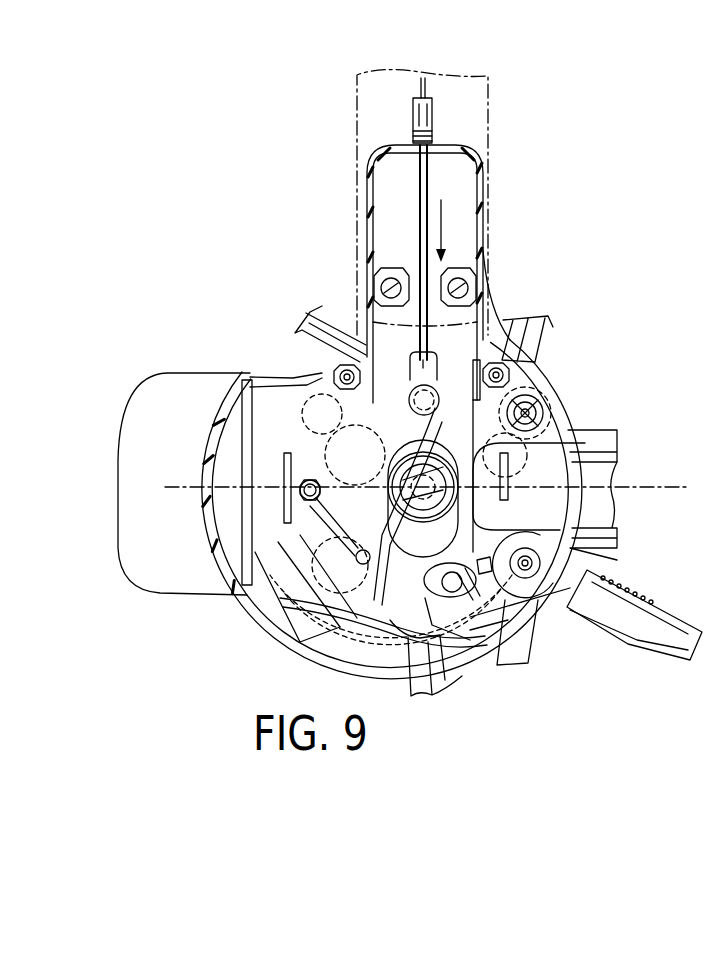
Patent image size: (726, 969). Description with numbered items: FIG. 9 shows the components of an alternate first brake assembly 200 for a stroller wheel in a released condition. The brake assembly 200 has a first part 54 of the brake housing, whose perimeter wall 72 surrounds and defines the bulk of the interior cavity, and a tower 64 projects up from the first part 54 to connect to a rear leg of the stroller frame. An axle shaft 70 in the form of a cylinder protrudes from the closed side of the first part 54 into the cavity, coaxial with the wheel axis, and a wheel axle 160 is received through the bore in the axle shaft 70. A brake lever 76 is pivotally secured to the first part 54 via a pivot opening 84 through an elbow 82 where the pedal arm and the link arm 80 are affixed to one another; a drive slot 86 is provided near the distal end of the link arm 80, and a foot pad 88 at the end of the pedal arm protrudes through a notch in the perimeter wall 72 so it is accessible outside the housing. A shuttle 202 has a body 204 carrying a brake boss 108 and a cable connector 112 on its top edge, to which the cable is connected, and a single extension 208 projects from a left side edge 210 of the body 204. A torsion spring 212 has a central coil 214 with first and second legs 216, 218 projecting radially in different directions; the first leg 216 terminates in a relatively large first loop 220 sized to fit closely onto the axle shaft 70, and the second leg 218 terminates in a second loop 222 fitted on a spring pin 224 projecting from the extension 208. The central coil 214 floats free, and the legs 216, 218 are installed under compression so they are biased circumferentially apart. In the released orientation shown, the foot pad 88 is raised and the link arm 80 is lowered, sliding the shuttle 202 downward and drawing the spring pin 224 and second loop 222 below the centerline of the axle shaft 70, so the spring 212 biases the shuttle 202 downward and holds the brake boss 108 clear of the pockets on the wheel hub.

The first brake assembly 200 is at (341, 426).
The tower 64 is at (388, 236).
The brake boss 108 is at (475, 219).
The cable connector 112 is at (371, 309).
The axle 160 is at (480, 342).
The torsion spring 212 is at (554, 355).
The perimeter wall 72 is at (611, 392).
The first part 54 is at (608, 455).
The first loop 220 is at (534, 476).
The left side edge 210 is at (414, 460).
The body 204 is at (240, 437).
The shuttle 202 is at (389, 335).
The axle shaft 70 is at (386, 459).
The second loop 222 is at (235, 457).
The spring pin 224 is at (222, 500).
The extension 208 is at (261, 598).
The second leg 218 is at (273, 607).
The central coil 214 is at (278, 618).
The first leg 216 is at (376, 553).
The link arm 80 is at (418, 666).
The drive slot 86 is at (458, 642).
The elbow 82 is at (520, 653).
The pivot opening 84 is at (546, 609).
The foot pad 88 is at (643, 615).
The brake lever 76 is at (664, 692).